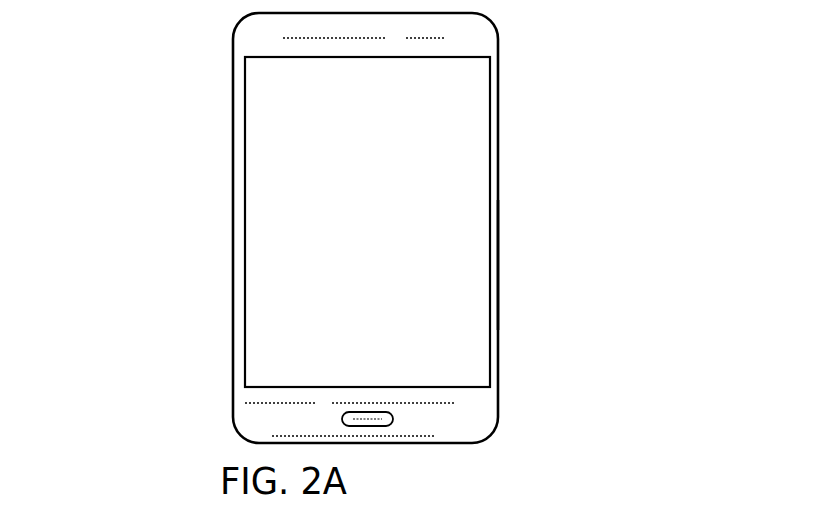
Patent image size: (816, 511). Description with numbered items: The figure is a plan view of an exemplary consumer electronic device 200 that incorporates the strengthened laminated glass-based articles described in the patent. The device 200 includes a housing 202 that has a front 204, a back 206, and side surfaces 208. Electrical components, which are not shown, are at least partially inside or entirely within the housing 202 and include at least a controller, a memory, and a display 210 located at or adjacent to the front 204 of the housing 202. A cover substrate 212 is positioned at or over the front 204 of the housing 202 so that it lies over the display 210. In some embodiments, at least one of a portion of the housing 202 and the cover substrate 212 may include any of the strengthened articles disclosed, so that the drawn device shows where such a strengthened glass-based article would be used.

The consumer electronic device 200 is at (523, 63).
The housing 202 is at (257, 37).
The front surface 204 is at (473, 420).
The back surface 206 is at (273, 175).
The side surfaces 208 is at (500, 263).
The display 210 is at (435, 182).
The cover substrate 212 is at (282, 287).